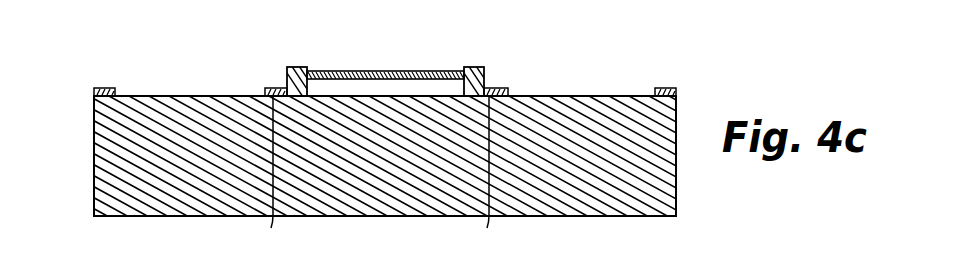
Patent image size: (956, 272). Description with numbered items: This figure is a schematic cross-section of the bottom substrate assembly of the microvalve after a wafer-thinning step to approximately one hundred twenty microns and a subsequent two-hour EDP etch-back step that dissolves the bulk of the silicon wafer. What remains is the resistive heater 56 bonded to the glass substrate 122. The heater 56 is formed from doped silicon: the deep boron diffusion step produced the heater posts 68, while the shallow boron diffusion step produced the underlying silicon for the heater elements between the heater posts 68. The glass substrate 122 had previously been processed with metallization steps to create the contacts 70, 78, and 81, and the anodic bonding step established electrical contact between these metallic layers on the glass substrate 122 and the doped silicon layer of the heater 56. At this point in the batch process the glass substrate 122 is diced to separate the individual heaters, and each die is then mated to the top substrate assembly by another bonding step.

The glass substrate 122 is at (110, 172).
The contact 70 is at (385, 175).
The contact 78 is at (94, 92).
The contact 81 is at (676, 93).
The heater post 68 is at (303, 66).
The resistive heater 56 is at (394, 70).